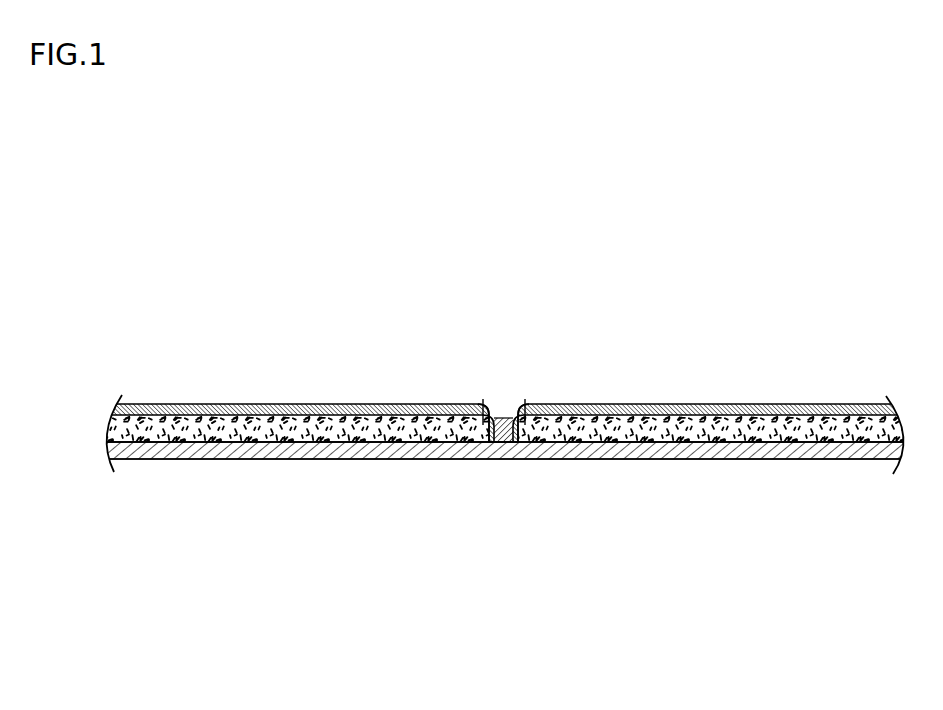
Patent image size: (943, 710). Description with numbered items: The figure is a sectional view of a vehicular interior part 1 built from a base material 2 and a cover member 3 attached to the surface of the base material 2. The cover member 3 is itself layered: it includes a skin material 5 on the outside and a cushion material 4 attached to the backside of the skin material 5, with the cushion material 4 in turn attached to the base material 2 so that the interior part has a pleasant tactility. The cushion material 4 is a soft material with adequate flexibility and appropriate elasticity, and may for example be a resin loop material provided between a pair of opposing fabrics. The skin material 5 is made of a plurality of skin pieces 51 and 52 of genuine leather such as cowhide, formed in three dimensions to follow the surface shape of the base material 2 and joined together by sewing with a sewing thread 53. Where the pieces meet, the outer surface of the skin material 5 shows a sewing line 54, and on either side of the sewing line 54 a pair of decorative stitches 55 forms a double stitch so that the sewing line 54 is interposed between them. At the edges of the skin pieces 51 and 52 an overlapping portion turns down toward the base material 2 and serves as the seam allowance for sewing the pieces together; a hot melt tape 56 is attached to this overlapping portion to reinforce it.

The vehicular interior part 1 is at (236, 266).
The base material 2 is at (800, 460).
The cover member 3 is at (862, 303).
The cushion material 4 is at (831, 425).
The skin material 5 is at (762, 412).
The skin piece 51 is at (340, 404).
The skin piece 52 is at (666, 404).
The sewing thread 53 is at (507, 442).
The sewing line 54 is at (500, 420).
The decorative stitch 55 is at (483, 403).
The hot melt tape 56 is at (498, 442).